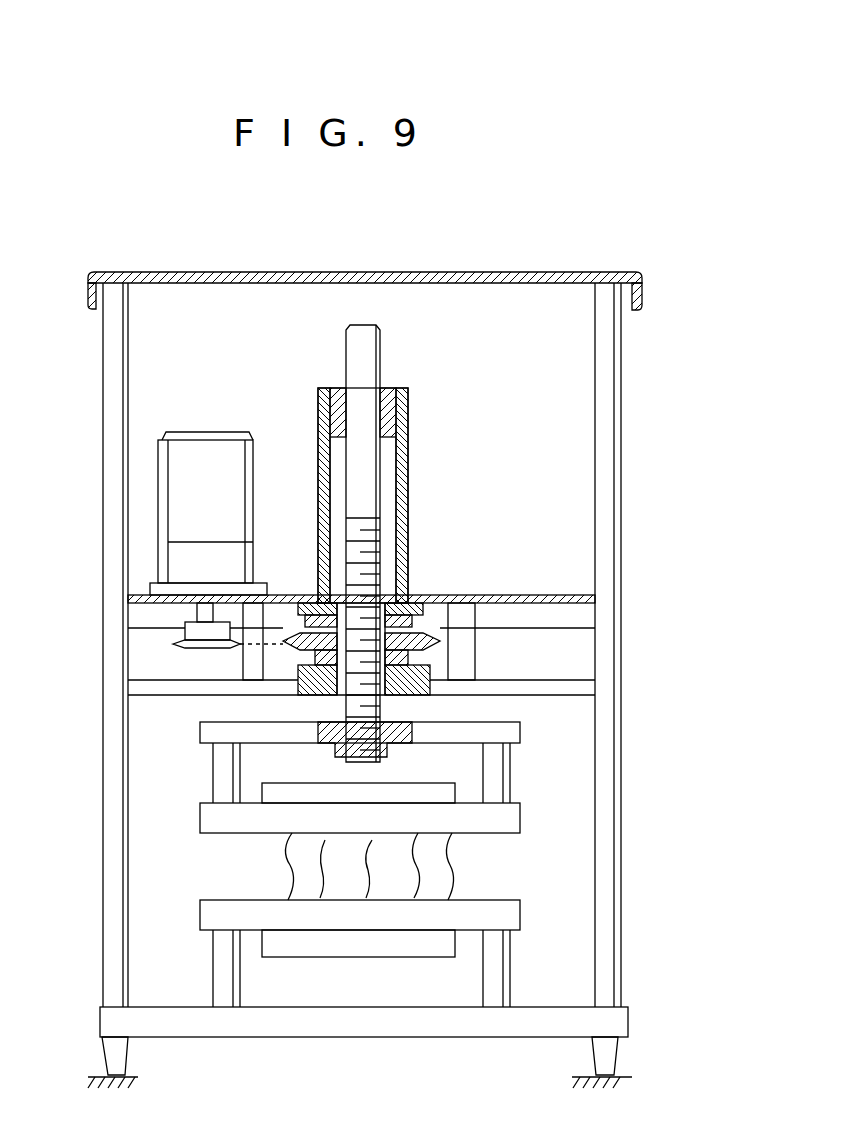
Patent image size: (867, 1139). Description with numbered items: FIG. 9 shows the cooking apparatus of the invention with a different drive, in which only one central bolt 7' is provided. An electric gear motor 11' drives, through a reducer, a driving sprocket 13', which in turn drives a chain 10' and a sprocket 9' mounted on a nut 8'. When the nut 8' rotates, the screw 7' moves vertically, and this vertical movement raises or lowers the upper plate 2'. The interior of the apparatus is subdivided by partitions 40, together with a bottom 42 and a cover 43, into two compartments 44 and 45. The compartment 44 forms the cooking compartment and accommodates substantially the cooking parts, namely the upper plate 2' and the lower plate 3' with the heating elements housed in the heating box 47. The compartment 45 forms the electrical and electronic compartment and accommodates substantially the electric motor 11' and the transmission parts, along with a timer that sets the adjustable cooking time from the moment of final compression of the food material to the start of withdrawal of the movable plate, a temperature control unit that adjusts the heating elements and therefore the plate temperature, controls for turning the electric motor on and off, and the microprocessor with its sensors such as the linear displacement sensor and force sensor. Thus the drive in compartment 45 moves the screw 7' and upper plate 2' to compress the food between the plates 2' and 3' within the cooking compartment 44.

The partitions 40 is at (387, 645).
The cover 43 is at (553, 270).
The compartment 45 is at (573, 448).
The electric gear motor 11' is at (156, 513).
The driving sprocket 13' is at (137, 618).
The chain 10' is at (213, 657).
The central bolt 7' is at (399, 543).
The nut 8' is at (358, 554).
The sprocket 9' is at (372, 676).
The compartment 44 is at (568, 862).
The heating box 47 is at (414, 790).
The upper plate 2' is at (388, 807).
The plate 3' is at (385, 909).
The bottom 42 is at (628, 1012).